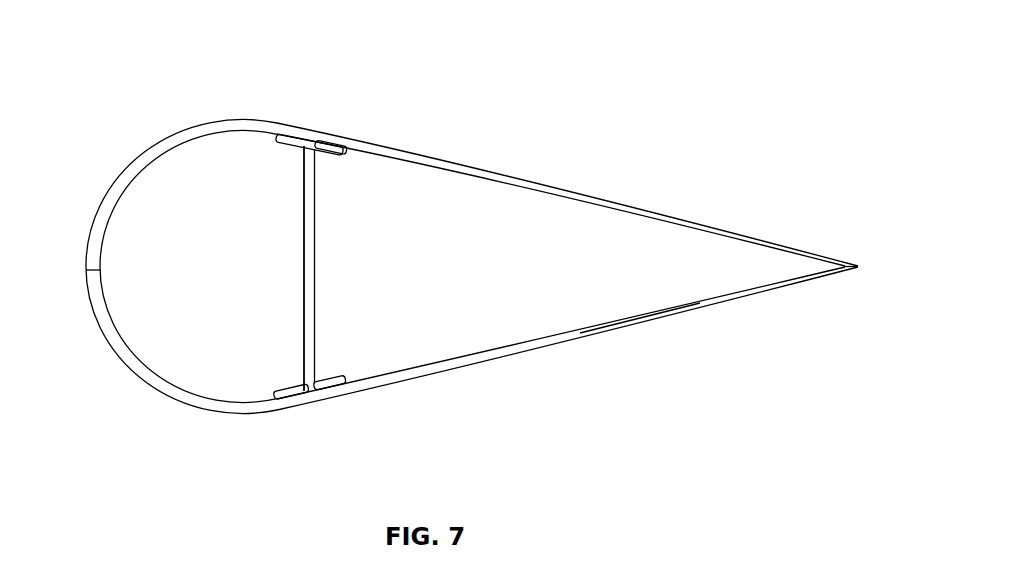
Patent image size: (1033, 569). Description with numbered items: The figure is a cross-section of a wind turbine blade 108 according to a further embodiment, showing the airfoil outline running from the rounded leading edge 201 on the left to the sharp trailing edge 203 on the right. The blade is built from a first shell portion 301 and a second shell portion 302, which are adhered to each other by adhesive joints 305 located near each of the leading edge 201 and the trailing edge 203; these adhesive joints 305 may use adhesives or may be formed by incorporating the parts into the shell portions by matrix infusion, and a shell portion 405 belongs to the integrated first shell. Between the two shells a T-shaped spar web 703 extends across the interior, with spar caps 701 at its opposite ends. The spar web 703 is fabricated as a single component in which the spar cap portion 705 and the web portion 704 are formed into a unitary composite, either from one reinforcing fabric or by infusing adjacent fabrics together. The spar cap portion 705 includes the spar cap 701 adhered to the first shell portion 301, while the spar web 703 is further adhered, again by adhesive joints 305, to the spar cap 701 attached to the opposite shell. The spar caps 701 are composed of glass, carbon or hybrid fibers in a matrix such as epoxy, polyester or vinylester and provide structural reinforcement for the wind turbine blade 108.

The wind turbine blade 108 is at (131, 56).
The leading edge 201 is at (94, 167).
The trailing edge 203 is at (814, 292).
The first shell portion 301 is at (576, 338).
The second shell portion 302 is at (500, 170).
The adhesive joint 305 is at (343, 137).
The shell portion 405 is at (592, 307).
The spar cap 701 is at (284, 134).
The spar web 703 is at (314, 252).
The web portion 704 is at (290, 269).
The spar cap portion 705 is at (344, 364).